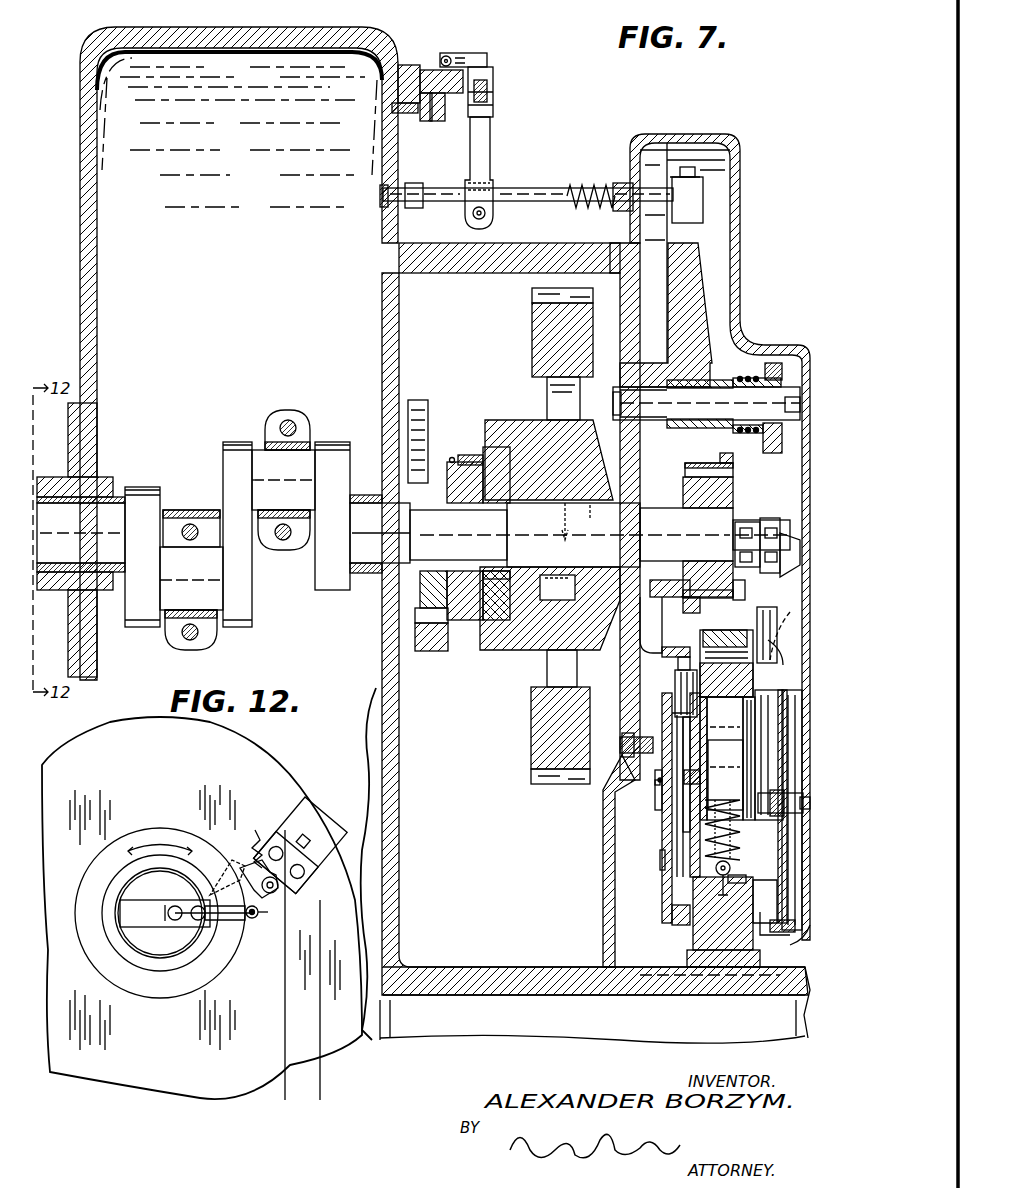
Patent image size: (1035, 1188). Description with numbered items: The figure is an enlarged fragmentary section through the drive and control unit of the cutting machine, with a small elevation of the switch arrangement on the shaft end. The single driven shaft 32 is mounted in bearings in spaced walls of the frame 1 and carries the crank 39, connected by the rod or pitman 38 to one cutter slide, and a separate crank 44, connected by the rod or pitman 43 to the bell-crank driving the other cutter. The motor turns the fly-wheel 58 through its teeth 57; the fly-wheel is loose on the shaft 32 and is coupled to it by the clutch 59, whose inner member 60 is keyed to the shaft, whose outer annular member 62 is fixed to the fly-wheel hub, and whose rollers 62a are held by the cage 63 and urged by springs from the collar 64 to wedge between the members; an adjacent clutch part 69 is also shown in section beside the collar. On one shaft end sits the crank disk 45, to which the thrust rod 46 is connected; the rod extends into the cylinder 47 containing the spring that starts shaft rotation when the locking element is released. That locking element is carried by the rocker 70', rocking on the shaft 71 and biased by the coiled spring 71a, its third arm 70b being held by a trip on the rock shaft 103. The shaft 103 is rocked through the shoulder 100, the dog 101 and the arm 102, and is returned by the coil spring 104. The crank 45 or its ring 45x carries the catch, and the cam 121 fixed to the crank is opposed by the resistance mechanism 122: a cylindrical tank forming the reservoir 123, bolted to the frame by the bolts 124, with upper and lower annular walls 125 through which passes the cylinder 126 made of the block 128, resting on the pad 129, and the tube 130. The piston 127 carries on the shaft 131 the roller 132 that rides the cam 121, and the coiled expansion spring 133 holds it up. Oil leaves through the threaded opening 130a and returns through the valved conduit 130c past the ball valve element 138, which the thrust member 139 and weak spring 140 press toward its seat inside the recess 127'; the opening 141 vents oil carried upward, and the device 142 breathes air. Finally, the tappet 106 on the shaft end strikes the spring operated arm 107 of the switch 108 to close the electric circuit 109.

In FIG. 7, the frame 1 is at (400, 910).
In FIG. 7, the shaft 32 is at (367, 555).
In FIG. 12, the shaft 32 is at (188, 942).
In FIG. 7, the rod or pitman 38 is at (280, 412).
In FIG. 7, the crank 39 is at (300, 455).
In FIG. 7, the rod or pitman 43 is at (168, 632).
In FIG. 7, the crank 44 is at (210, 577).
In FIG. 7, the crank disk 45 is at (733, 497).
In FIG. 7, the ring 45x is at (695, 604).
In FIG. 7, the thrust rod 46 is at (768, 589).
In FIG. 7, the cylinder 47 is at (785, 932).
In FIG. 7, the teeth 57 is at (548, 786).
In FIG. 7, the fly-wheel 58 is at (530, 733).
In FIG. 7, the clutch 59 is at (445, 518).
In FIG. 7, the inner member 60 is at (498, 504).
In FIG. 7, the outer annular member 62 is at (498, 622).
In FIG. 7, the rollers 62a is at (500, 592).
In FIG. 7, the cage 63 is at (469, 455).
In FIG. 7, the collar 64 is at (468, 504).
In FIG. 7, the bearing cap 69 is at (430, 655).
In FIG. 7, the rocker 70' is at (720, 537).
In FIG. 7, the third arm 70b is at (690, 263).
In FIG. 7, the shaft 71 is at (745, 423).
In FIG. 7, the coiled spring 71a is at (745, 355).
In FIG. 7, the shoulder 100 is at (488, 64).
In FIG. 7, the dog 101 is at (492, 103).
In FIG. 7, the arm 102 is at (490, 138).
In FIG. 7, the rock shaft 103 is at (513, 190).
In FIG. 7, the coil spring 104 is at (590, 184).
In FIG. 12, the tappet 106 is at (232, 920).
In FIG. 12, the spring operated arm 107 is at (250, 872).
In FIG. 12, the switch 108 is at (302, 842).
In FIG. 12, the electric circuit 109 is at (205, 917).
In FIG. 7, the cam 121 is at (737, 600).
In FIG. 7, the resistance mechanism 122 is at (700, 853).
In FIG. 7, the reservoir or surge tank 123 is at (662, 906).
In FIG. 7, the bolts 124 is at (620, 748).
In FIG. 7, the annular walls 125 is at (668, 932).
In FIG. 7, the cylinder 126 is at (766, 815).
In FIG. 7, the piston 127 is at (727, 758).
In FIG. 7, the recess 127' is at (616, 803).
In FIG. 7, the block 128 is at (693, 942).
In FIG. 7, the pad 129 is at (713, 976).
In FIG. 7, the tube 130 is at (780, 768).
In FIG. 7, the threaded opening 130a is at (650, 790).
In FIG. 7, the valved conduit 130c is at (770, 931).
In FIG. 7, the shaft 131 is at (678, 668).
In FIG. 7, the roller 132 is at (739, 663).
In FIG. 7, the coiled expansion spring 133 is at (662, 858).
In FIG. 7, the valve element 138 is at (735, 878).
In FIG. 7, the thrust member 139 is at (697, 864).
In FIG. 7, the spring 140 is at (725, 775).
In FIG. 7, the opening 141 is at (687, 768).
In FIG. 7, the device 142 is at (676, 688).